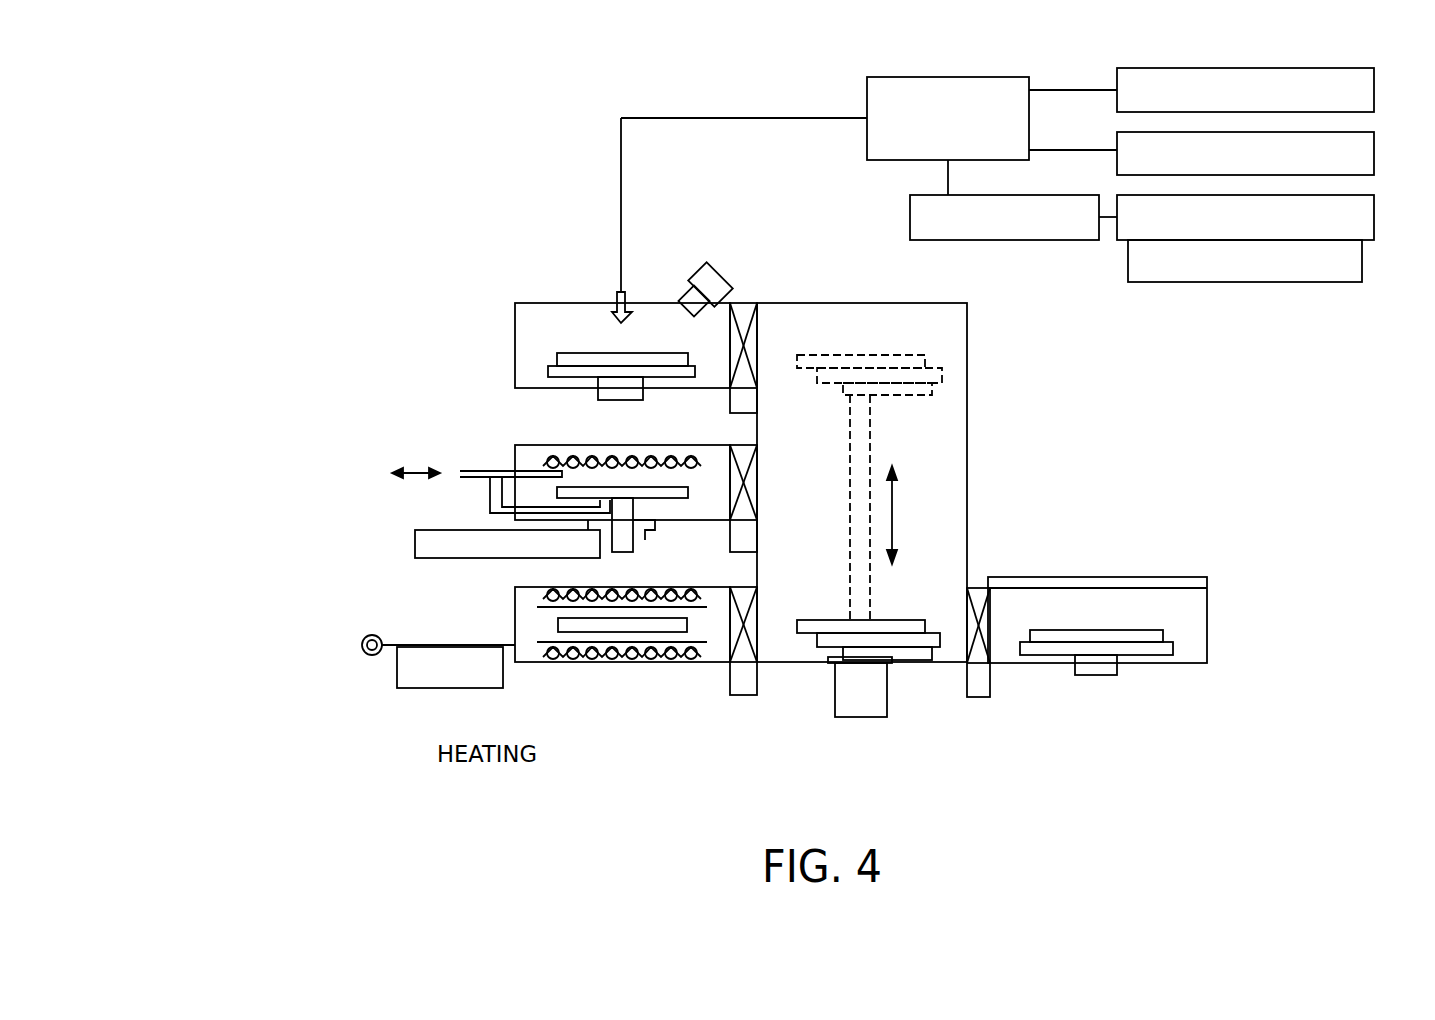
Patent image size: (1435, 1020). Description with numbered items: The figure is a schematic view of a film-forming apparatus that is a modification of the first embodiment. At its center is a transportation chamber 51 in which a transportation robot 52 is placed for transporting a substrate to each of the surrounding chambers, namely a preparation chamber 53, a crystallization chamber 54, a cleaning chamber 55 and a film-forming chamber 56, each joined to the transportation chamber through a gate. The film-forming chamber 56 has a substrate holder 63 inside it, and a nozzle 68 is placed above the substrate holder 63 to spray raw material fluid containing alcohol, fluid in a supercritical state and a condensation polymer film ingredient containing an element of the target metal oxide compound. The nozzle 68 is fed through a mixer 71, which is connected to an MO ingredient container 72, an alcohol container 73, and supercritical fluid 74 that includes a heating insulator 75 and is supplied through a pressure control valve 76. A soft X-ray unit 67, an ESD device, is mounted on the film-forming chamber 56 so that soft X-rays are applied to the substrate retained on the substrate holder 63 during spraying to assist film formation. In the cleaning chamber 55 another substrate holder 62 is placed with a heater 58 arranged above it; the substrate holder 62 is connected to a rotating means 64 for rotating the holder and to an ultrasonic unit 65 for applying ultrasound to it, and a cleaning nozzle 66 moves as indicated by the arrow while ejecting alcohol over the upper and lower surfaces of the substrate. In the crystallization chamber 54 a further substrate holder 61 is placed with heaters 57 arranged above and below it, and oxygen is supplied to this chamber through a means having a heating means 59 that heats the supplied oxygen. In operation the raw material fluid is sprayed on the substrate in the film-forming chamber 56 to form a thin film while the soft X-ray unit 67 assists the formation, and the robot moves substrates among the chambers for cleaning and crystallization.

The transportation chamber 51 is at (780, 663).
The transportation robot 52 is at (887, 703).
The preparation chamber 53 is at (1062, 600).
The crystallization chamber 54 is at (515, 595).
The cleaning chamber 55 is at (515, 452).
The film-forming chamber 56 is at (515, 320).
The heaters 57 is at (553, 599).
The heater 58 is at (556, 455).
The heating means 59 is at (397, 668).
The substrate holder 61 is at (683, 631).
The substrate holder 62 is at (688, 490).
The substrate holder 63 is at (548, 372).
The rotating means 64 is at (652, 538).
The ultrasonic unit 65 is at (415, 542).
The cleaning nozzle 66 is at (468, 479).
The soft X-ray unit 67 is at (714, 264).
The nozzle 68 is at (619, 291).
The mixer 71 is at (946, 77).
The MO ingredient container 72 is at (1376, 90).
The alcohol container 73 is at (1376, 154).
The supercritical fluid 74 is at (1376, 218).
The heating insulator 75 is at (1364, 262).
The pressure control valve 76 is at (1007, 242).